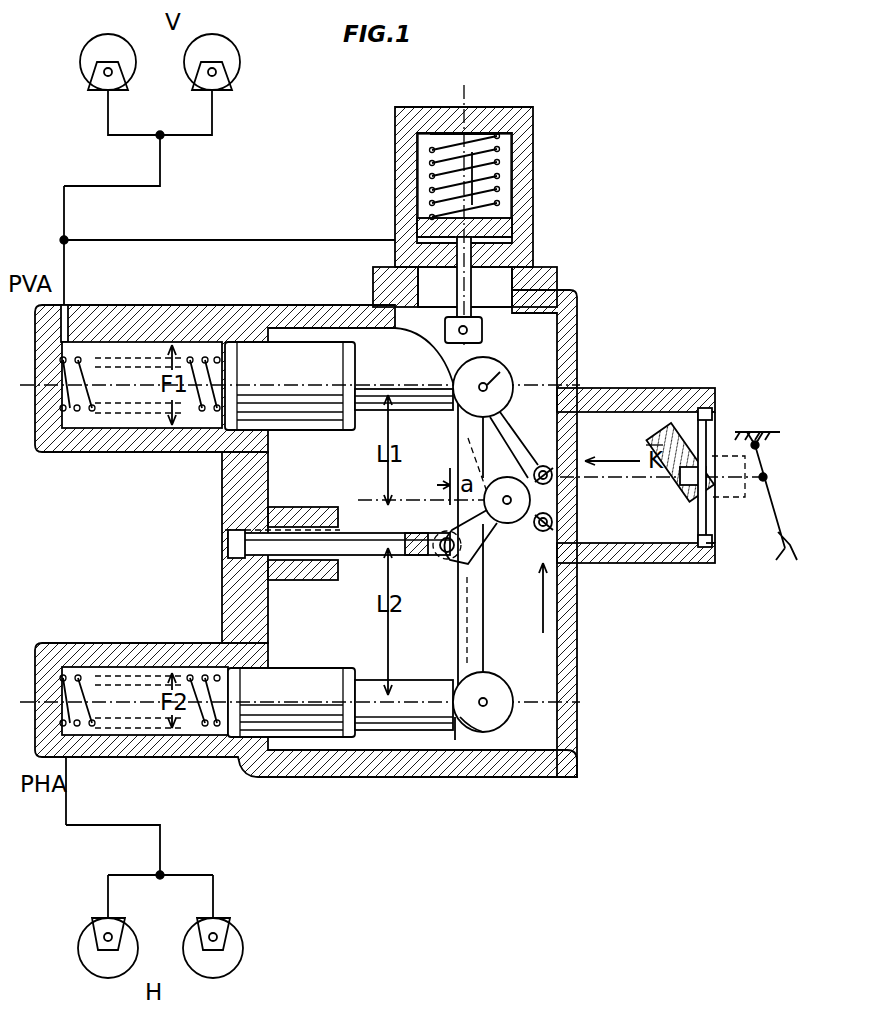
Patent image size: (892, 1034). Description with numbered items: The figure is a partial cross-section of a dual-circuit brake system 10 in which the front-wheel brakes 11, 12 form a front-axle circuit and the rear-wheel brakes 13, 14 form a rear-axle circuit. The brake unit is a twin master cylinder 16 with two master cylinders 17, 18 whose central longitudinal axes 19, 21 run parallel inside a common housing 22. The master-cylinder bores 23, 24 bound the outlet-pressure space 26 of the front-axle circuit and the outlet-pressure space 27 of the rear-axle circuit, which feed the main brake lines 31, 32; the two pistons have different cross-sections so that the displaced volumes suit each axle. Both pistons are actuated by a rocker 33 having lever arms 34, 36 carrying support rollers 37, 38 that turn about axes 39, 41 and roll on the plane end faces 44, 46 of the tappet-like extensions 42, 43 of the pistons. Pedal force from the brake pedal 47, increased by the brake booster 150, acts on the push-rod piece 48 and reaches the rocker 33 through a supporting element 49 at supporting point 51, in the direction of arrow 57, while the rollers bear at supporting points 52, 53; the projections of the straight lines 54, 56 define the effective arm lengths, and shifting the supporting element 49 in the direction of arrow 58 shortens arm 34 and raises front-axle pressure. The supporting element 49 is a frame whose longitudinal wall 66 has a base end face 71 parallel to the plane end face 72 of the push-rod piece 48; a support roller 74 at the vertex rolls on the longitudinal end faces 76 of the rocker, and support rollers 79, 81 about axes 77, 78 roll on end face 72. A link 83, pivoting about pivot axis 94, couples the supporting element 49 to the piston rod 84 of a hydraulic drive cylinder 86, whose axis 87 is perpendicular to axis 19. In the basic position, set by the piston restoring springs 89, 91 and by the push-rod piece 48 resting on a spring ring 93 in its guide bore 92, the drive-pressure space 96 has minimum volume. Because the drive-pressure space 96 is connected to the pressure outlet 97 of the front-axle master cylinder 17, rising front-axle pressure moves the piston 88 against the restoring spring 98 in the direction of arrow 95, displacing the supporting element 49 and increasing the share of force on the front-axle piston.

The dual-circuit brake system 10 is at (660, 204).
The front-wheel brake 11 is at (106, 45).
The front-wheel brake 12 is at (222, 45).
The rear-wheel brake 13 is at (100, 962).
The rear-wheel brake 14 is at (228, 962).
The twin master cylinder 16 is at (217, 476).
The front-axle master cylinder 17 is at (80, 466).
The rear-axle master cylinder 18 is at (79, 635).
The central longitudinal axis 19 is at (128, 395).
The central longitudinal axis 21 is at (104, 700).
The common housing 22 is at (232, 594).
The master-cylinder bore 23 is at (137, 345).
The master-cylinder bore 24 is at (120, 730).
The outlet-pressure space 26 is at (155, 350).
The outlet-pressure space 27 is at (143, 705).
The main brake line 31 is at (66, 275).
The main brake line 32 is at (68, 790).
The rocker 33 is at (456, 607).
The lever arm 34 is at (466, 455).
The lever arm 36 is at (470, 648).
The support roller 37 is at (505, 365).
The support roller 38 is at (495, 725).
The axis of rotation 39 is at (505, 352).
The axis of rotation 41 is at (490, 690).
The tappet-like extension 42 is at (372, 370).
The tappet-like extension 43 is at (372, 680).
The plane end face 44 is at (428, 335).
The plane end face 46 is at (453, 732).
The brake pedal 47 is at (766, 506).
The push-rod piece 48 is at (683, 392).
The supporting element 49 is at (490, 530).
The supporting point 51 is at (480, 510).
The supporting point 52 is at (418, 367).
The supporting point 53 is at (452, 690).
The straight line 54 is at (470, 488).
The straight line 56 is at (472, 555).
The arrow 57 is at (662, 470).
The arrow 58 is at (558, 625).
The longitudinal wall 66 is at (575, 388).
The base end face 71 is at (552, 512).
The plane end face 72 is at (548, 465).
The support roller 74 is at (530, 540).
The longitudinal end face 76 is at (485, 620).
The axis 77 is at (558, 470).
The axis 78 is at (552, 515).
The support roller 79 is at (552, 470).
The support roller 81 is at (552, 528).
The link 83 is at (500, 448).
The piston rod 84 is at (452, 305).
The hydraulic drive cylinder 86 is at (389, 140).
The central longitudinal axis 87 is at (428, 172).
The piston 88 is at (520, 215).
The piston restoring spring 89 is at (207, 358).
The piston restoring spring 91 is at (208, 730).
The guide bore 92 is at (710, 412).
The spring ring 93 is at (712, 543).
The pivot axis 94 is at (470, 330).
The arrow 95 is at (495, 186).
The drive-pressure space 96 is at (518, 244).
The pressure outlet 97 is at (66, 238).
The restoring spring 98 is at (510, 140).
The brake booster 150 is at (722, 495).